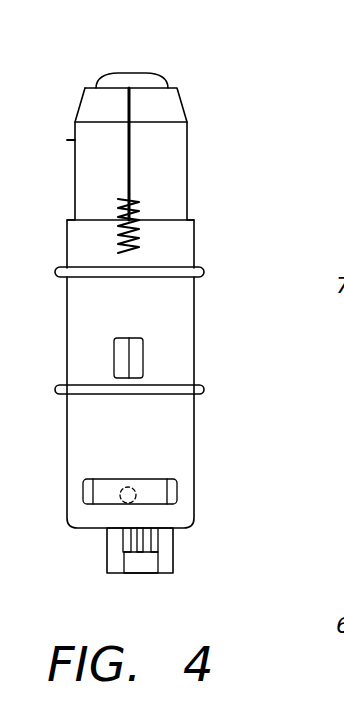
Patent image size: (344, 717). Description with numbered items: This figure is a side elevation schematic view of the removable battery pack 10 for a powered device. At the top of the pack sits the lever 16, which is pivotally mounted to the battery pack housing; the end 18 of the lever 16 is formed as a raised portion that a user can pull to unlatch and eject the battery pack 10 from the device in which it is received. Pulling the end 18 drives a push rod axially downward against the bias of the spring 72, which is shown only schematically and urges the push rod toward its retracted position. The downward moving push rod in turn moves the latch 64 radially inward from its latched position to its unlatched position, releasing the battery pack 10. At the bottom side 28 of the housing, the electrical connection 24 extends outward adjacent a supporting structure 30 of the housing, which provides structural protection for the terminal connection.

The battery pack 10 is at (177, 316).
The lever 16 is at (163, 82).
The end of the lever 18 is at (132, 70).
The spring 72 is at (140, 233).
The bottom side 28 is at (183, 531).
The latch 64 is at (100, 493).
The supporting structure 30 is at (168, 558).
The electrical connection 24 is at (141, 553).